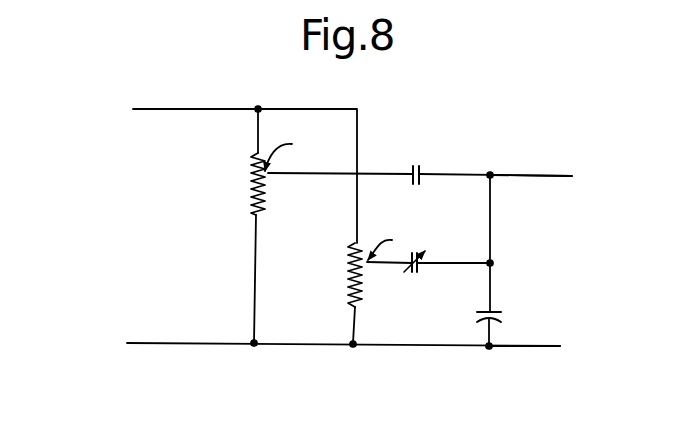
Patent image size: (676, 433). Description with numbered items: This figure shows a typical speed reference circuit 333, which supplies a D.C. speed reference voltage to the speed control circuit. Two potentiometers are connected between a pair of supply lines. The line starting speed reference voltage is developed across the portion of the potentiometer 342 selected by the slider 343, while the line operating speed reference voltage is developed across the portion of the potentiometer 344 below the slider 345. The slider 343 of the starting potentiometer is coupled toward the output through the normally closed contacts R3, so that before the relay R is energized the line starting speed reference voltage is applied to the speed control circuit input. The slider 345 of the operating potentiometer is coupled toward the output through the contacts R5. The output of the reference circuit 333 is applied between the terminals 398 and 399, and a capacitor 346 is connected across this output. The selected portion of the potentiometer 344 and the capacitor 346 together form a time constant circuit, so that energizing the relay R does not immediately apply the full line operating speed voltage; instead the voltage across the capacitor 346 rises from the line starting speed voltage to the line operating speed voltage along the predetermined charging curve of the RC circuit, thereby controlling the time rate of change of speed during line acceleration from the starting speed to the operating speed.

The speed reference circuit 333 is at (387, 107).
The potentiometer 344 is at (247, 203).
The slider 345 is at (303, 150).
The potentiometer 342 is at (350, 283).
The slider 343 is at (400, 236).
The capacitor R5 is at (422, 169).
The normally closed contacts R3 is at (421, 268).
The capacitor 346 is at (495, 311).
The terminal 398 is at (560, 175).
The terminal 399 is at (560, 346).